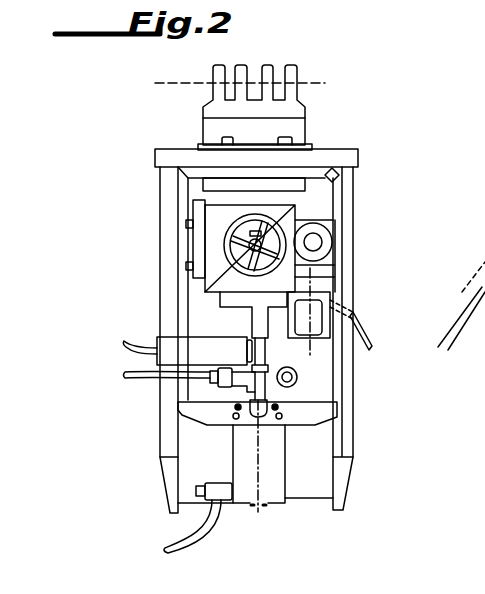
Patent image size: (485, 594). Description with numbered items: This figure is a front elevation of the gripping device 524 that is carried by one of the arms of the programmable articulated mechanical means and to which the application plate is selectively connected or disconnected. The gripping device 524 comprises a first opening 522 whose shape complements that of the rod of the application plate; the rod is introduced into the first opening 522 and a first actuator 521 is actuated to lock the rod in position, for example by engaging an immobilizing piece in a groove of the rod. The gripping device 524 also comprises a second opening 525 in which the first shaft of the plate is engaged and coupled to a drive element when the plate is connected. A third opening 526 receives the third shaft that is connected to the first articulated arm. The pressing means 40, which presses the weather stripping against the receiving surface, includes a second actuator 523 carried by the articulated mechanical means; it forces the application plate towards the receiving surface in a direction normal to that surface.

The gripping device 524 is at (135, 167).
The second opening 525 is at (242, 255).
The first opening 522 is at (322, 238).
The first actuator 521 is at (320, 325).
The third opening 526 is at (297, 379).
The second actuator 523 is at (245, 480).
The means for pressing 40 is at (276, 509).